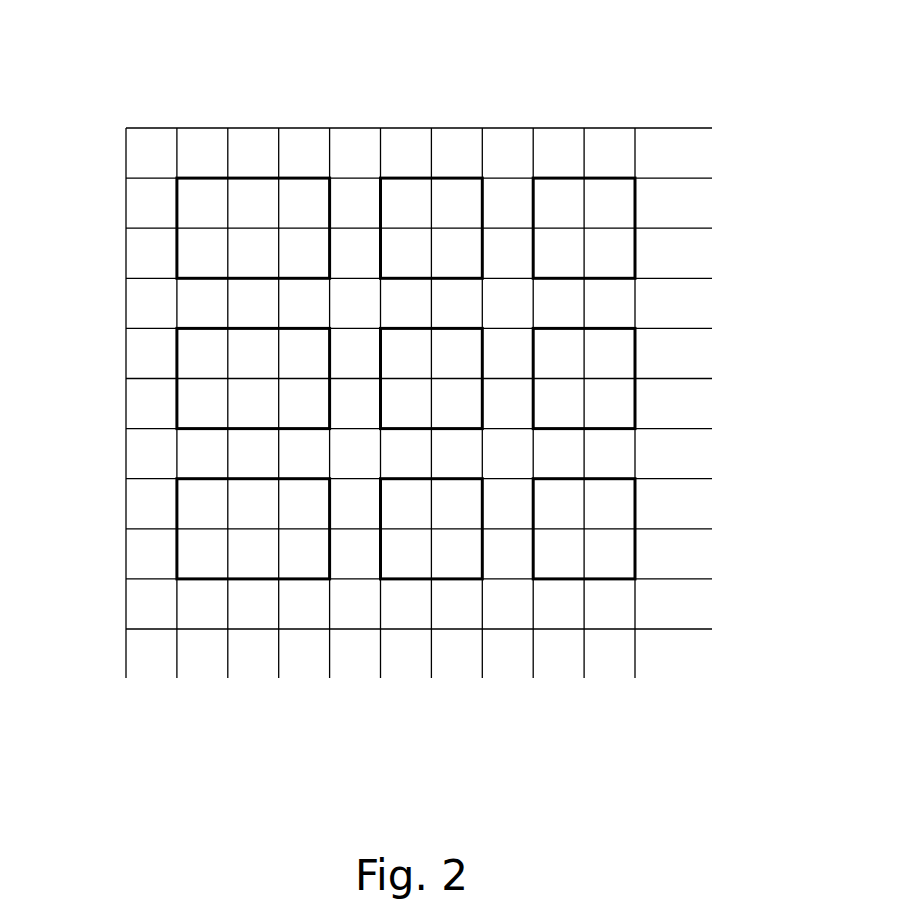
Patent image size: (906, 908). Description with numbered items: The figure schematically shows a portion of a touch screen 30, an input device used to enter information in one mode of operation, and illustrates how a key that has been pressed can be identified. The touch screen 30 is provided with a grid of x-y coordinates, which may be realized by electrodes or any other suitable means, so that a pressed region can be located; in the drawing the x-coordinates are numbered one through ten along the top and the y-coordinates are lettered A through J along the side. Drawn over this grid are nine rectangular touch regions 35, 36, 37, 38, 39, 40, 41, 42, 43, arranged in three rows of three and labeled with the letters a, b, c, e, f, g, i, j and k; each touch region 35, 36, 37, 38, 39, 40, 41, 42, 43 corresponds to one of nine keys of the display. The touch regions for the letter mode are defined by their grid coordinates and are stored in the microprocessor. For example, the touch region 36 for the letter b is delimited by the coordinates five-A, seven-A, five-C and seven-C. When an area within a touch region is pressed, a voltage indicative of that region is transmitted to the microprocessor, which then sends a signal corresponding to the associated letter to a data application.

The touch screen 30 is at (96, 124).
The touch region 35 is at (227, 203).
The touch region 36 is at (445, 205).
The touch region 37 is at (610, 203).
The touch region 38 is at (203, 354).
The touch region 39 is at (455, 340).
The touch region 40 is at (620, 353).
The touch region 41 is at (228, 553).
The touch region 42 is at (417, 563).
The touch region 43 is at (610, 553).